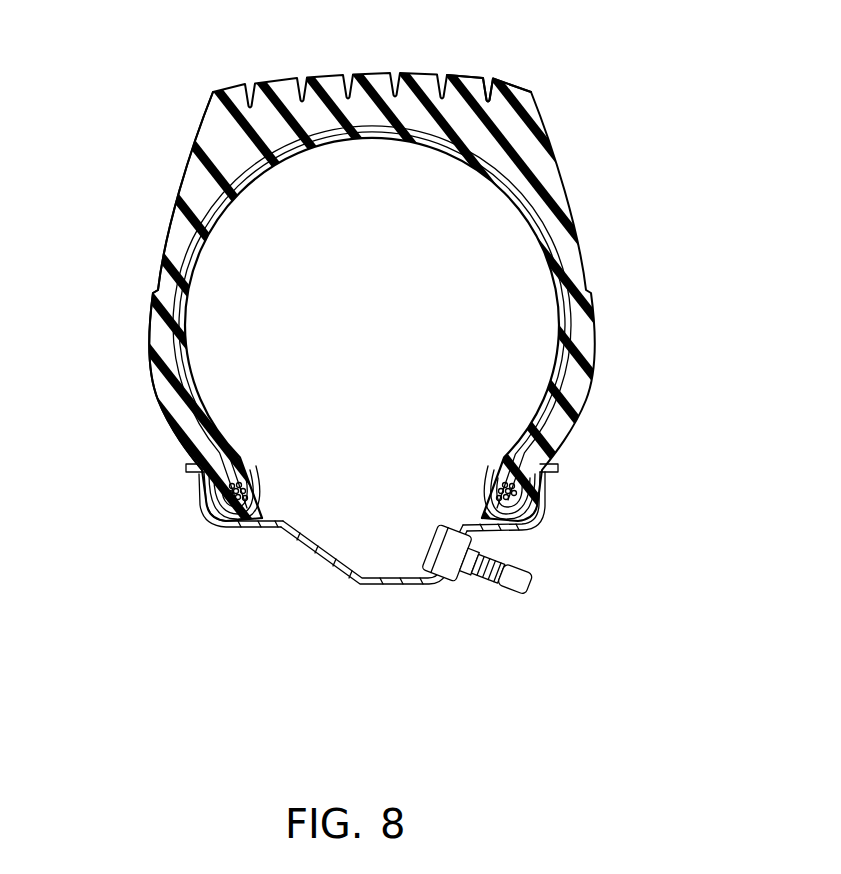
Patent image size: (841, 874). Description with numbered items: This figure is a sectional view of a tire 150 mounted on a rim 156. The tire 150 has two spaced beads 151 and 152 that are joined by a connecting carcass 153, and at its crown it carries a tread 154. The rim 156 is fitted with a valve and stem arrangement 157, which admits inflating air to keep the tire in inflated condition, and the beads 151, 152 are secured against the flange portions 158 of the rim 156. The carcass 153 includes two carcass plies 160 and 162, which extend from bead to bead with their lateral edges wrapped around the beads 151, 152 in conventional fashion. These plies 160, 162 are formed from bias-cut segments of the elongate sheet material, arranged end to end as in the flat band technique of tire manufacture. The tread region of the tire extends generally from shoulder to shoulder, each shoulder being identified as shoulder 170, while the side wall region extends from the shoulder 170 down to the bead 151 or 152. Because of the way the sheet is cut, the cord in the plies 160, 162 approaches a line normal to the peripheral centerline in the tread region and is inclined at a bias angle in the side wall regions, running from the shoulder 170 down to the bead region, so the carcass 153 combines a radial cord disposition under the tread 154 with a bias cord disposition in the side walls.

The tire 150 is at (420, 320).
The bead 151 is at (205, 497).
The bead 152 is at (528, 490).
The connecting carcass 153 is at (185, 207).
The tread 154 is at (470, 78).
The rim 156 is at (370, 580).
The valve and stem arrangement 157 is at (483, 580).
The flange portions 158 is at (190, 470).
The carcass ply 160 is at (562, 331).
The carcass ply 162 is at (588, 351).
The shoulder 170 is at (228, 150).